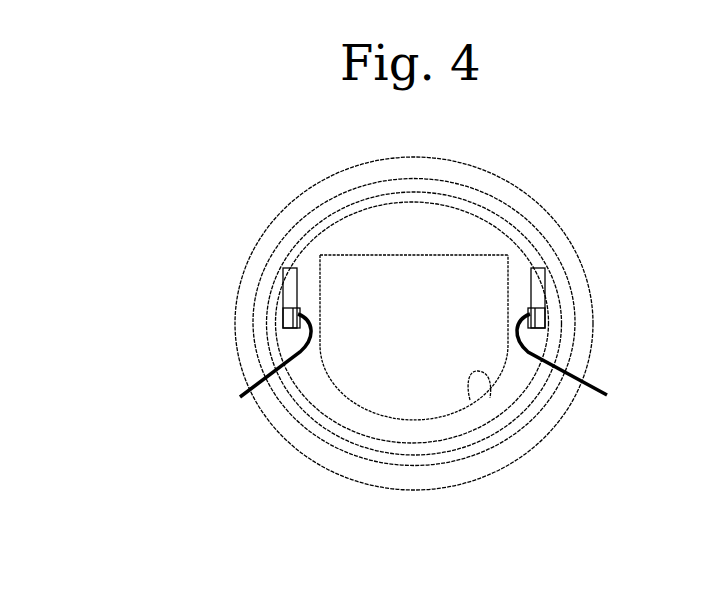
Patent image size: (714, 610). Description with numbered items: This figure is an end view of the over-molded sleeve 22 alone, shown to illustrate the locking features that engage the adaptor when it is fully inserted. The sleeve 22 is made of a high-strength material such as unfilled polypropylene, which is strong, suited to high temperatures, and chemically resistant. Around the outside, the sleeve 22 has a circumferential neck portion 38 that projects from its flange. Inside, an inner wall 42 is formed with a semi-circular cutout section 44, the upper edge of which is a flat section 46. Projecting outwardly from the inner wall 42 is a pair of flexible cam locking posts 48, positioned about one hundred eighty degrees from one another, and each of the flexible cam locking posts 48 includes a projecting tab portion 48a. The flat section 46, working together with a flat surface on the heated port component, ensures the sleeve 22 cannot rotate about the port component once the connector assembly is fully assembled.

The sleeve 22 is at (163, 331).
The circumferential neck portion 38 is at (282, 423).
The inner wall 42 is at (402, 427).
The semi-circular cutout section 44 is at (470, 400).
The flat section 46 is at (390, 256).
The flexible cam locking posts 48 is at (285, 288).
The projecting tab portion 48a is at (423, 364).